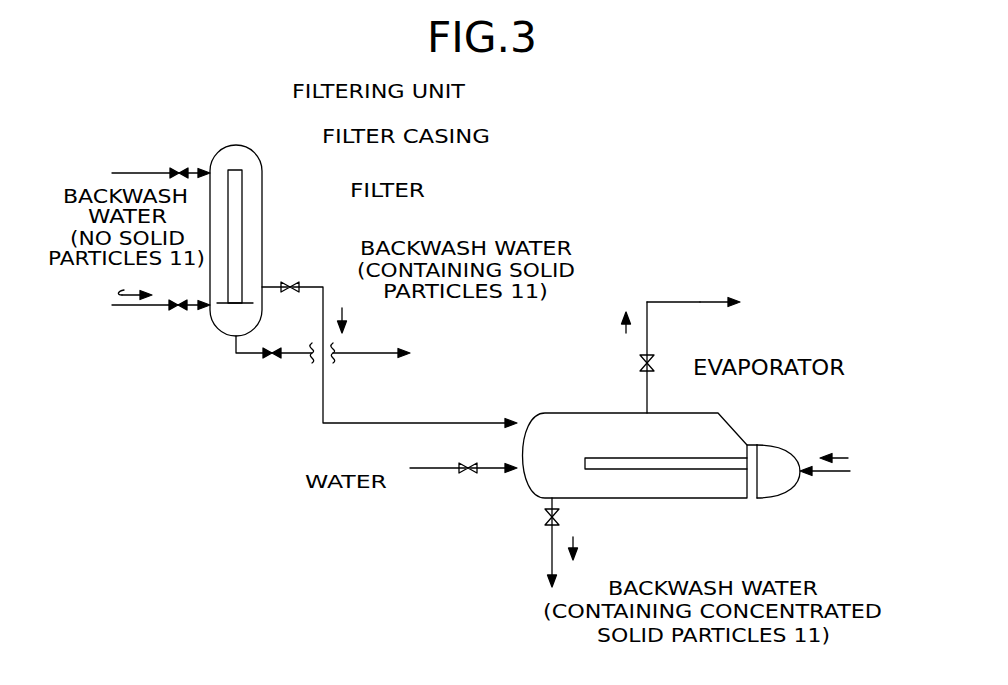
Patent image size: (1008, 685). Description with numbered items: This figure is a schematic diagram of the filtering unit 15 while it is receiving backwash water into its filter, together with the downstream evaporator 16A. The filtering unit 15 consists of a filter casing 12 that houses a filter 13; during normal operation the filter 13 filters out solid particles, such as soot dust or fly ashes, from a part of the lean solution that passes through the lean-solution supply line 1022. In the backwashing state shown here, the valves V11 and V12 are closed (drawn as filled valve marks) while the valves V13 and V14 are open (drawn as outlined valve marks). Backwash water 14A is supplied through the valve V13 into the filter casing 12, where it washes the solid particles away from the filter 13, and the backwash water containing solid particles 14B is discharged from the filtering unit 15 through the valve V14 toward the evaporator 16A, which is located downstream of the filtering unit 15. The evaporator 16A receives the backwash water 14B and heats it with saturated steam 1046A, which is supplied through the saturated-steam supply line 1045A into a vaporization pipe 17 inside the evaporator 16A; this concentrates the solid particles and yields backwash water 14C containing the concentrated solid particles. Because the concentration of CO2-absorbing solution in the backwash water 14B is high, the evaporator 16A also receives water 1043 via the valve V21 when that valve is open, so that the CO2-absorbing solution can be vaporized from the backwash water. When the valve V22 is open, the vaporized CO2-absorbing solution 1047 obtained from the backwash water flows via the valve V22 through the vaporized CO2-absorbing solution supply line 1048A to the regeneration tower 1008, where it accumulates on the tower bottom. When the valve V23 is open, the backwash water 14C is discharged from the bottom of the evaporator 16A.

The filtering unit 15 is at (299, 217).
The filter casing 12 is at (263, 182).
The filter 13 is at (243, 218).
The backwash water 14A is at (131, 283).
The backwash water containing solid particles 14B is at (343, 312).
The backwash water containing concentrated solid particles 14C is at (575, 540).
The lean-solution supply line 1022 is at (397, 355).
The regeneration tower 1008 is at (747, 303).
The vaporized CO2-absorbing solution 1047 is at (626, 327).
The vaporized CO2-absorbing solution supply line 1048A is at (682, 301).
The evaporator 16A is at (700, 413).
The vaporization pipe 17 is at (605, 457).
The water 1043 is at (433, 453).
The saturated steam 1046A is at (837, 458).
The saturated-steam supply line 1045A is at (828, 476).
The valve V11 is at (178, 168).
The valve V12 is at (270, 360).
The valve V13 is at (178, 312).
The valve V14 is at (290, 280).
The valve V21 is at (467, 475).
The valve V22 is at (655, 360).
The valve V23 is at (545, 520).